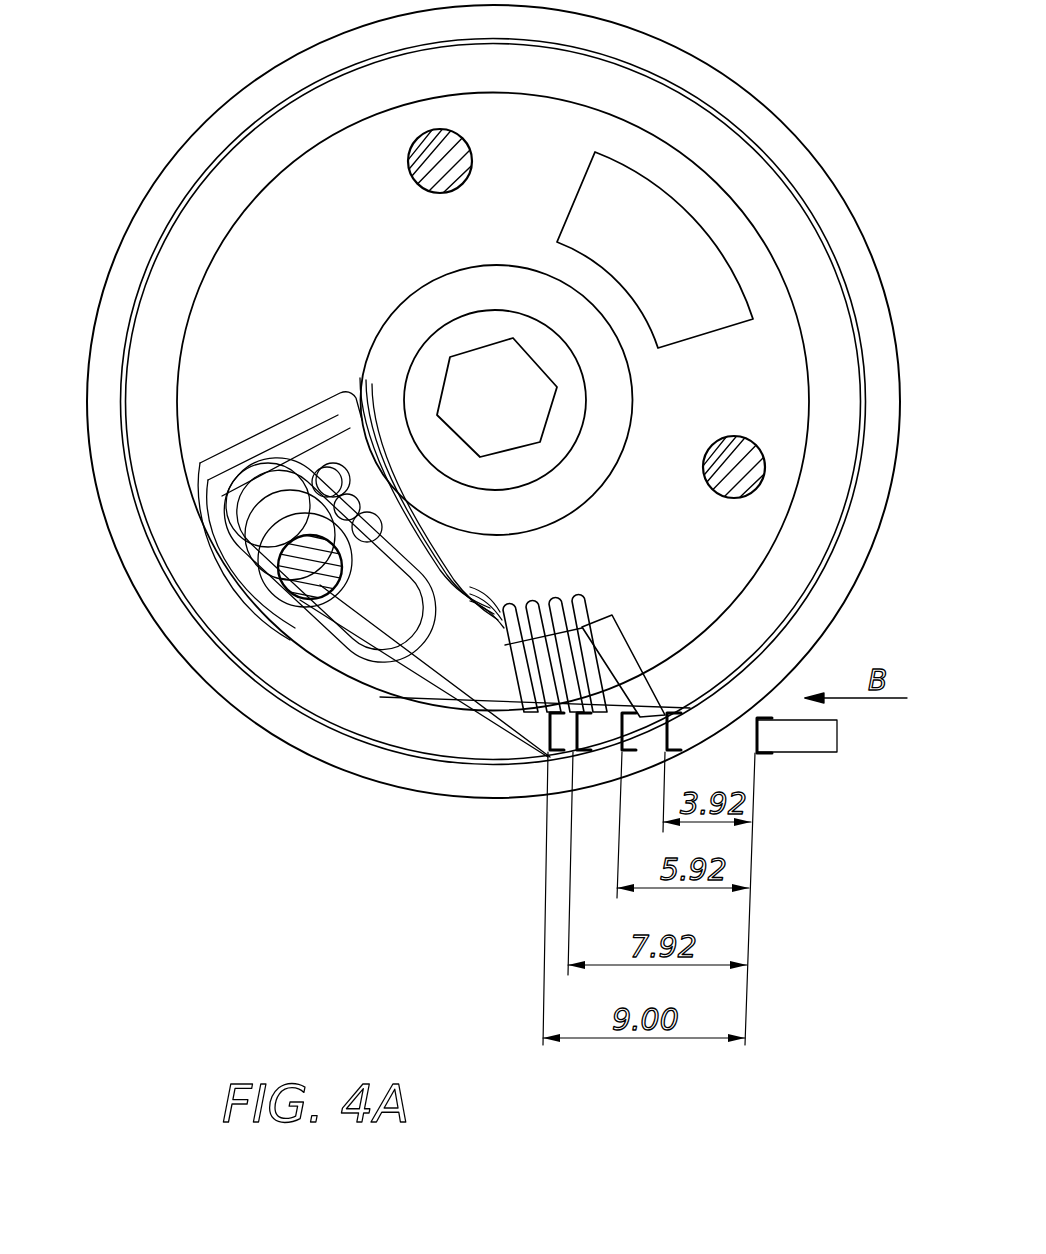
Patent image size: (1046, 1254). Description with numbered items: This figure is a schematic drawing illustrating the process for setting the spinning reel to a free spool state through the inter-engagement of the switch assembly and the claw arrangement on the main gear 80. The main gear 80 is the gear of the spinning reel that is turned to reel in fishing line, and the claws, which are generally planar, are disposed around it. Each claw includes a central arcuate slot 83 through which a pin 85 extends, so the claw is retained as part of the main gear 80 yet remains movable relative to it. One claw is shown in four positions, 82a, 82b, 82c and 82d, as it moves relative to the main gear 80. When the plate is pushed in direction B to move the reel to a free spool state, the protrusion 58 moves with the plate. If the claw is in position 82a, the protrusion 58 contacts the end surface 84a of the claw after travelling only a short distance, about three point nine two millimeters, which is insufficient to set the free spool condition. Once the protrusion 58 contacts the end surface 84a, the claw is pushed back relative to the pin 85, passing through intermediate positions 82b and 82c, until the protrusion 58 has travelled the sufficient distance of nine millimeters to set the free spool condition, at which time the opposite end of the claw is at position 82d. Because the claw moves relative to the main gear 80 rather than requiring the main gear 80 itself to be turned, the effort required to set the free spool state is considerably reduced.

The main gear 80 is at (567, 136).
The claw position a 82a is at (574, 605).
The claw position b 82b is at (550, 600).
The claw position c 82c is at (524, 603).
The claw position d 82d is at (507, 600).
The end surface of claw 84a is at (633, 637).
The central arcuate slot 83 is at (270, 562).
The pin 85 is at (300, 582).
The protrusion 58 is at (819, 740).